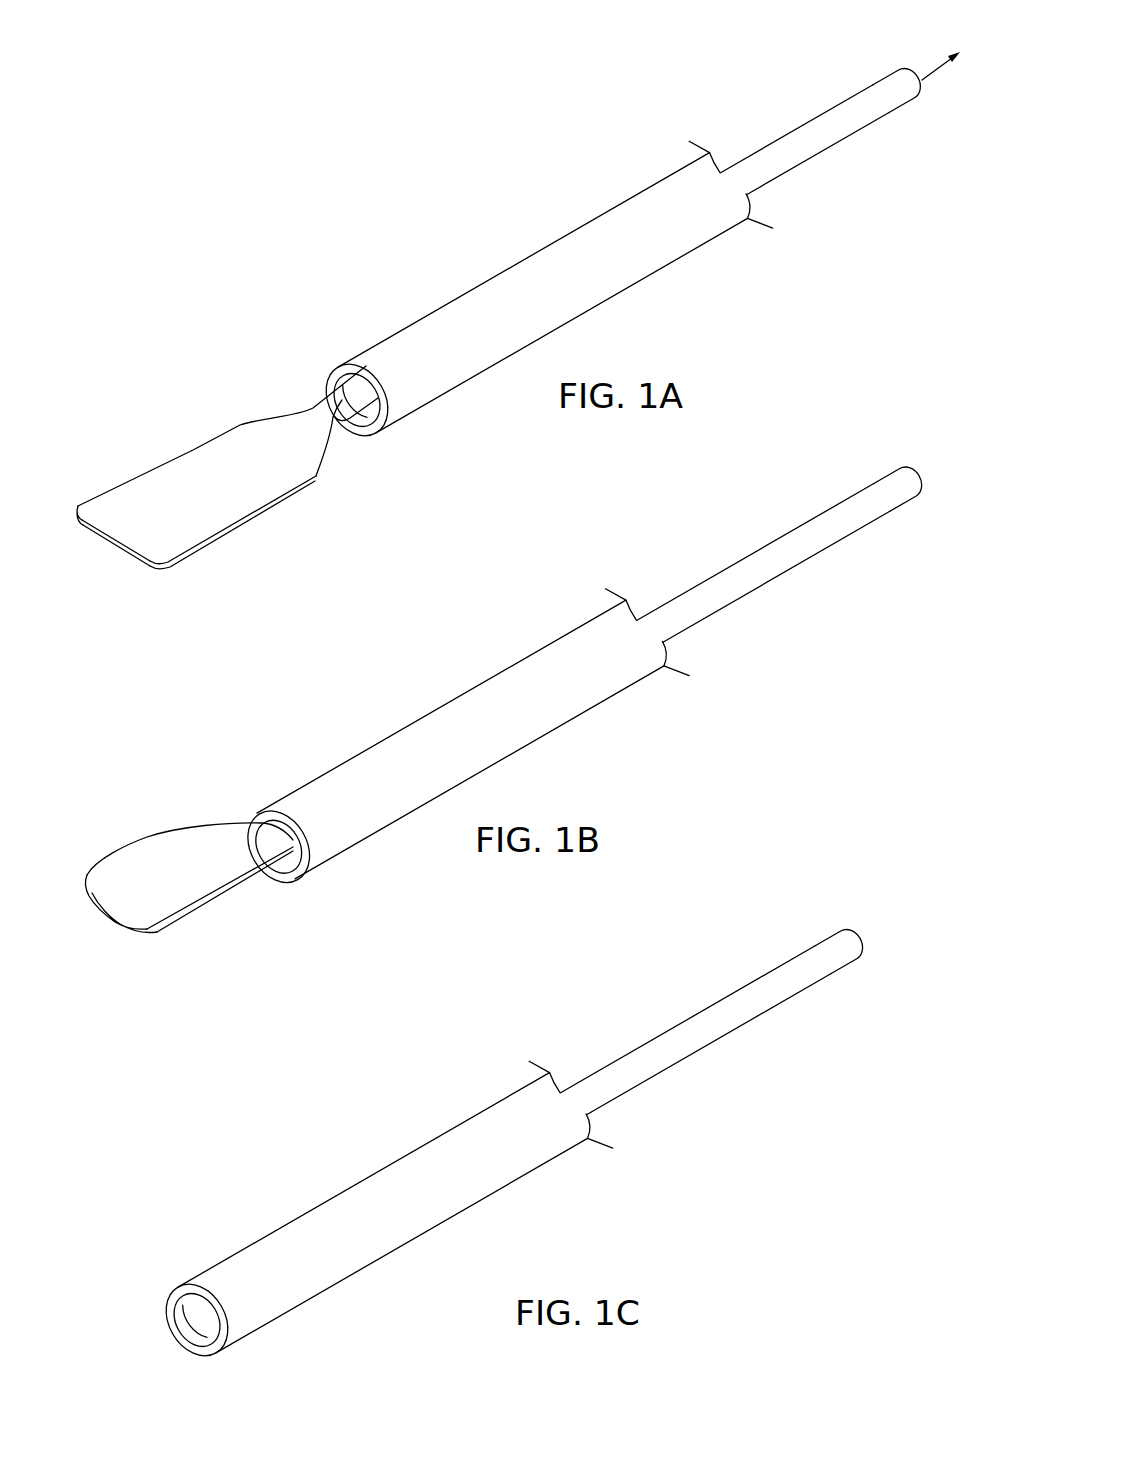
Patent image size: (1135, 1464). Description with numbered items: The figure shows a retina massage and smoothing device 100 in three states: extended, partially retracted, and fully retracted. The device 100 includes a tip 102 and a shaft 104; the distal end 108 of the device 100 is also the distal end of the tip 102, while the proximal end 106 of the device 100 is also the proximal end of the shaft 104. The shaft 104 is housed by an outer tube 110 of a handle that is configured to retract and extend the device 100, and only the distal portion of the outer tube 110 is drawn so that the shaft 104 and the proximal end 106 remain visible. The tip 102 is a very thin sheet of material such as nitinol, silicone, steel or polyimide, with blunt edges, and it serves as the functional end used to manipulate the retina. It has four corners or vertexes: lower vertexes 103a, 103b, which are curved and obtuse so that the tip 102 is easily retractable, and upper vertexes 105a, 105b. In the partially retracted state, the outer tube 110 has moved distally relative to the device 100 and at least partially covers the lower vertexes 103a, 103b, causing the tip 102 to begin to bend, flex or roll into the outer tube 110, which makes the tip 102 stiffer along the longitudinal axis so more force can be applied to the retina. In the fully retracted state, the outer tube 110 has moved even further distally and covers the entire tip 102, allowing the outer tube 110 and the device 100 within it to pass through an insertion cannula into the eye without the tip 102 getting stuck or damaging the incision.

In FIG. 1A, the device 100 is at (502, 324).
In FIG. 1B, the device 100 is at (484, 704).
In FIG. 1C, the device 100 is at (490, 1134).
In FIG. 1A, the tip 102 is at (211, 489).
In FIG. 1B, the tip 102 is at (202, 872).
In FIG. 1A, the lower vertex 103a is at (243, 430).
In FIG. 1B, the lower vertex 103a is at (253, 823).
In FIG. 1A, the lower vertex 103b is at (300, 468).
In FIG. 1B, the lower vertex 103b is at (300, 858).
In FIG. 1A, the shaft 104 is at (756, 153).
In FIG. 1B, the shaft 104 is at (723, 568).
In FIG. 1C, the shaft 104 is at (657, 1037).
In FIG. 1A, the upper vertex 105a is at (78, 505).
In FIG. 1A, the upper vertex 105b is at (167, 565).
In FIG. 1A, the proximal end 106 is at (902, 71).
In FIG. 1B, the proximal end 106 is at (899, 473).
In FIG. 1C, the proximal end 106 is at (838, 936).
In FIG. 1A, the distal end 108 is at (115, 545).
In FIG. 1B, the distal end 108 is at (103, 910).
In FIG. 1C, the distal end 108 is at (176, 1338).
In FIG. 1A, the outer tube 110 is at (486, 284).
In FIG. 1B, the outer tube 110 is at (400, 735).
In FIG. 1C, the outer tube 110 is at (322, 1206).